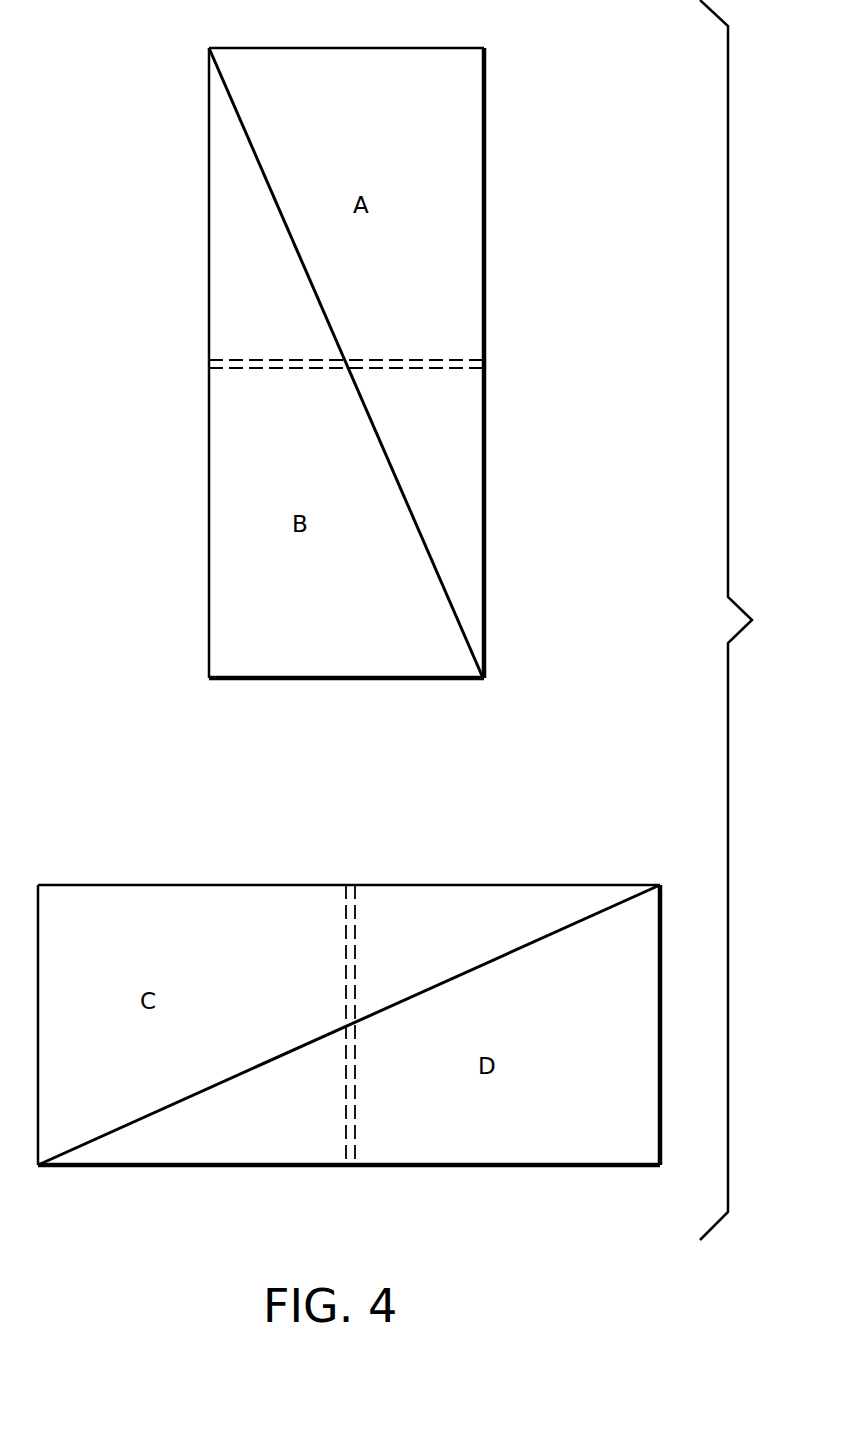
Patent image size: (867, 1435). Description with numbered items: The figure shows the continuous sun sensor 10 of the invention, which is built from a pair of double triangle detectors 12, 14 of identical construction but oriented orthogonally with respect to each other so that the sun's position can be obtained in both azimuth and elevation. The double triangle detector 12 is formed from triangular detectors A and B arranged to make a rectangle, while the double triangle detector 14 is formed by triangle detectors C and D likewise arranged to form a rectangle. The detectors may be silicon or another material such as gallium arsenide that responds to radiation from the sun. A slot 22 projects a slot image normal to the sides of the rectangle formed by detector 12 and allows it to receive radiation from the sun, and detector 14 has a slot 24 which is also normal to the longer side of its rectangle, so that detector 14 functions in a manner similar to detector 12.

The continuous sensor 10 is at (568, 735).
The double triangle detector 12 is at (305, 48).
The double triangle detector 14 is at (220, 1168).
The slot 22 is at (228, 368).
The slot 24 is at (356, 1145).